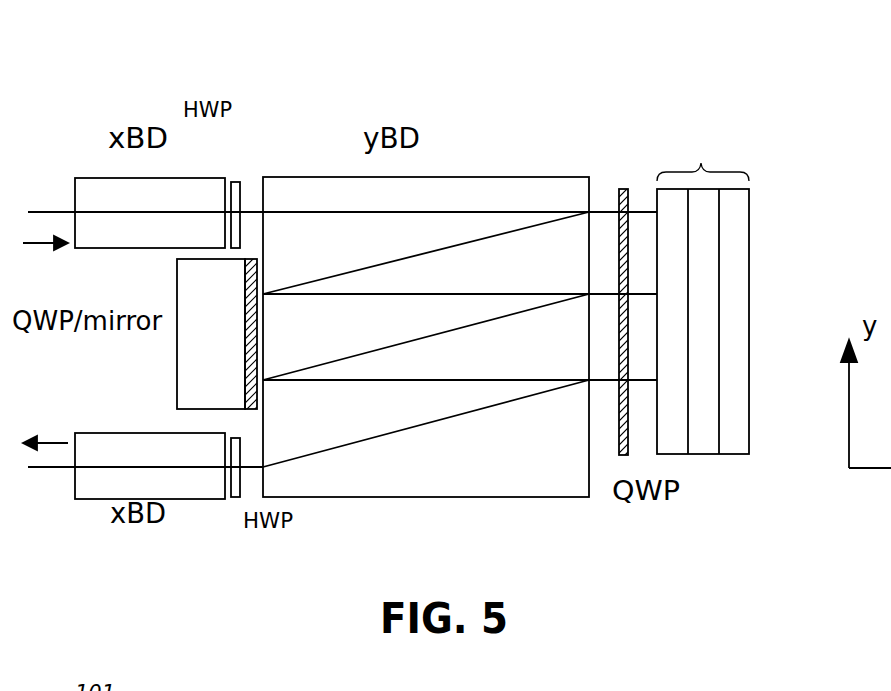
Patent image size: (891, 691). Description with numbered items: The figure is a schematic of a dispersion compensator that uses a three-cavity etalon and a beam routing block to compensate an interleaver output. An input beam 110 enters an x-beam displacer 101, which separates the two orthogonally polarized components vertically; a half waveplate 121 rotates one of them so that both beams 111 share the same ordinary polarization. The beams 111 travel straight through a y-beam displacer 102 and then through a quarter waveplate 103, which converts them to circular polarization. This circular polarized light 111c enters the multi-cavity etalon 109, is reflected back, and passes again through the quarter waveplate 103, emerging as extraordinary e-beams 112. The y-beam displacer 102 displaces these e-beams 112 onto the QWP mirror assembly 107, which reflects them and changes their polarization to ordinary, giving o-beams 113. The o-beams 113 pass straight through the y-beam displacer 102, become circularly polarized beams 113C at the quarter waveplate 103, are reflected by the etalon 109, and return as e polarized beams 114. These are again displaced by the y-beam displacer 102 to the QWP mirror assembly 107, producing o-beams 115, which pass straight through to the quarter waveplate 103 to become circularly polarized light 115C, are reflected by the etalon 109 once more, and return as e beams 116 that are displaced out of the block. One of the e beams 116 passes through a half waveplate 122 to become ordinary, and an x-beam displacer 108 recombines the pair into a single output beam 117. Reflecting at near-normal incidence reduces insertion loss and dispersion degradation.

The input beam 110 is at (53, 212).
The x-beam displacer 101 is at (108, 178).
The half waveplate 121 is at (238, 181).
The QWP mirror assembly 107 is at (252, 258).
The y-beam displacer 102 is at (303, 177).
The beams 111 is at (556, 193).
The e-beams 112 is at (499, 234).
The o-beams 113 is at (463, 294).
The e polarized beams 114 is at (423, 336).
The o-beams 115 is at (437, 381).
The e beams 116 is at (377, 437).
The quarter waveplate 103 is at (627, 190).
The circular polarized light 111c is at (641, 207).
The circularly polarized beams 113C is at (638, 296).
The circularly polarized light 115C is at (638, 382).
The multi-cavity etalon 109 is at (745, 175).
The beam 117 is at (60, 468).
The x-beam displacer 108 is at (200, 500).
The half waveplate 122 is at (234, 498).